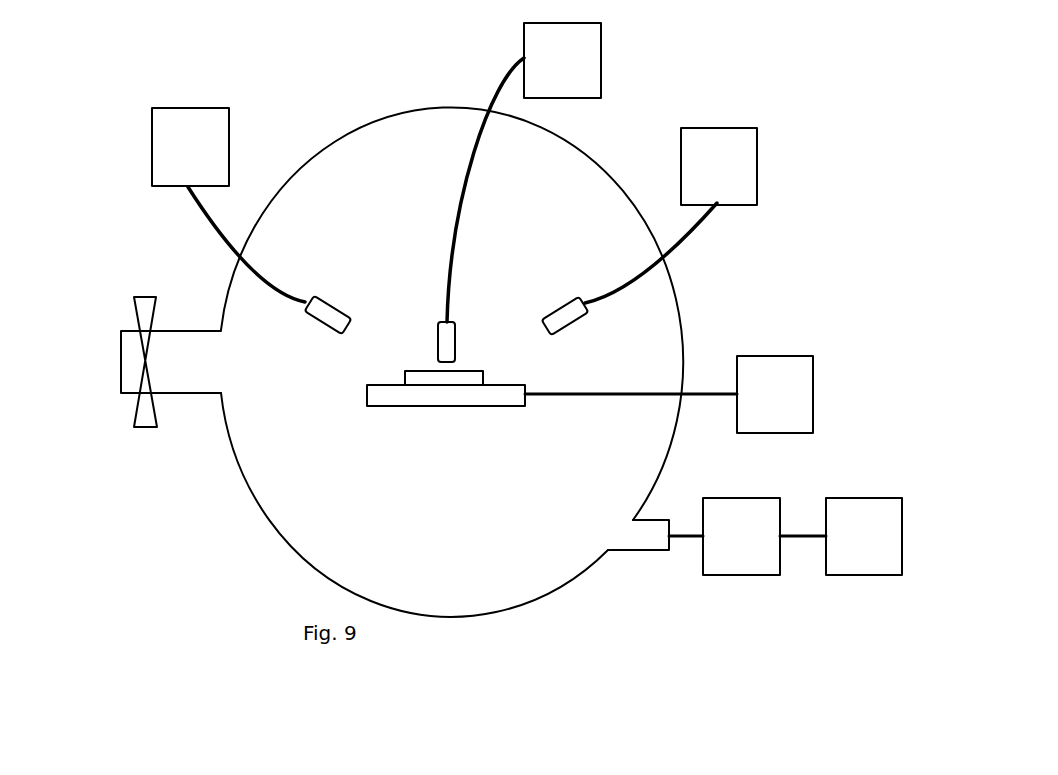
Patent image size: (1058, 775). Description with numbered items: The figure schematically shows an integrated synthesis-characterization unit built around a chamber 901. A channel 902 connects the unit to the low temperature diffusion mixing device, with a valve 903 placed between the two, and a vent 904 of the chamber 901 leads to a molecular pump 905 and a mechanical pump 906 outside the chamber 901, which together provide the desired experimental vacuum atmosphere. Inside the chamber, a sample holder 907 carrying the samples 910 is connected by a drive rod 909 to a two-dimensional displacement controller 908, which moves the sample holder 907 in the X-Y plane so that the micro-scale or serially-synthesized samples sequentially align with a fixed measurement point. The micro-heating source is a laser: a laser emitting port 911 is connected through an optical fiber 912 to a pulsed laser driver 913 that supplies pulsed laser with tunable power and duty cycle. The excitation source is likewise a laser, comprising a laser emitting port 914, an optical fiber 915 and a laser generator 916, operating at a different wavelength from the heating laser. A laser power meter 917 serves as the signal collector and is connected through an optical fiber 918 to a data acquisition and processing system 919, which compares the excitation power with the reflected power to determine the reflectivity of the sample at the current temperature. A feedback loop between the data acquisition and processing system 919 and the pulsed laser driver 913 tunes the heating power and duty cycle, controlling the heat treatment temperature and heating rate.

The chamber 901 is at (276, 530).
The channel 902 is at (197, 395).
The valve 903 is at (133, 407).
The vent 904 is at (645, 551).
The molecular pump 905 is at (737, 576).
The mechanical pump 906 is at (867, 576).
The sample holder 907 is at (527, 407).
The 2D displacement controller 908 is at (813, 390).
The drive rod 909 is at (696, 393).
The samples 910 is at (404, 378).
The laser emitting port 911 is at (438, 337).
The optical fiber 912 is at (490, 81).
The pulsed laser driver 913 is at (601, 55).
The laser emitting port 914 is at (343, 308).
The optical fiber 915 is at (215, 228).
The laser generator 916 is at (185, 108).
The laser power meter 917 is at (553, 303).
The optical fiber 918 is at (670, 256).
The data acquisition and processing system 919 is at (757, 165).